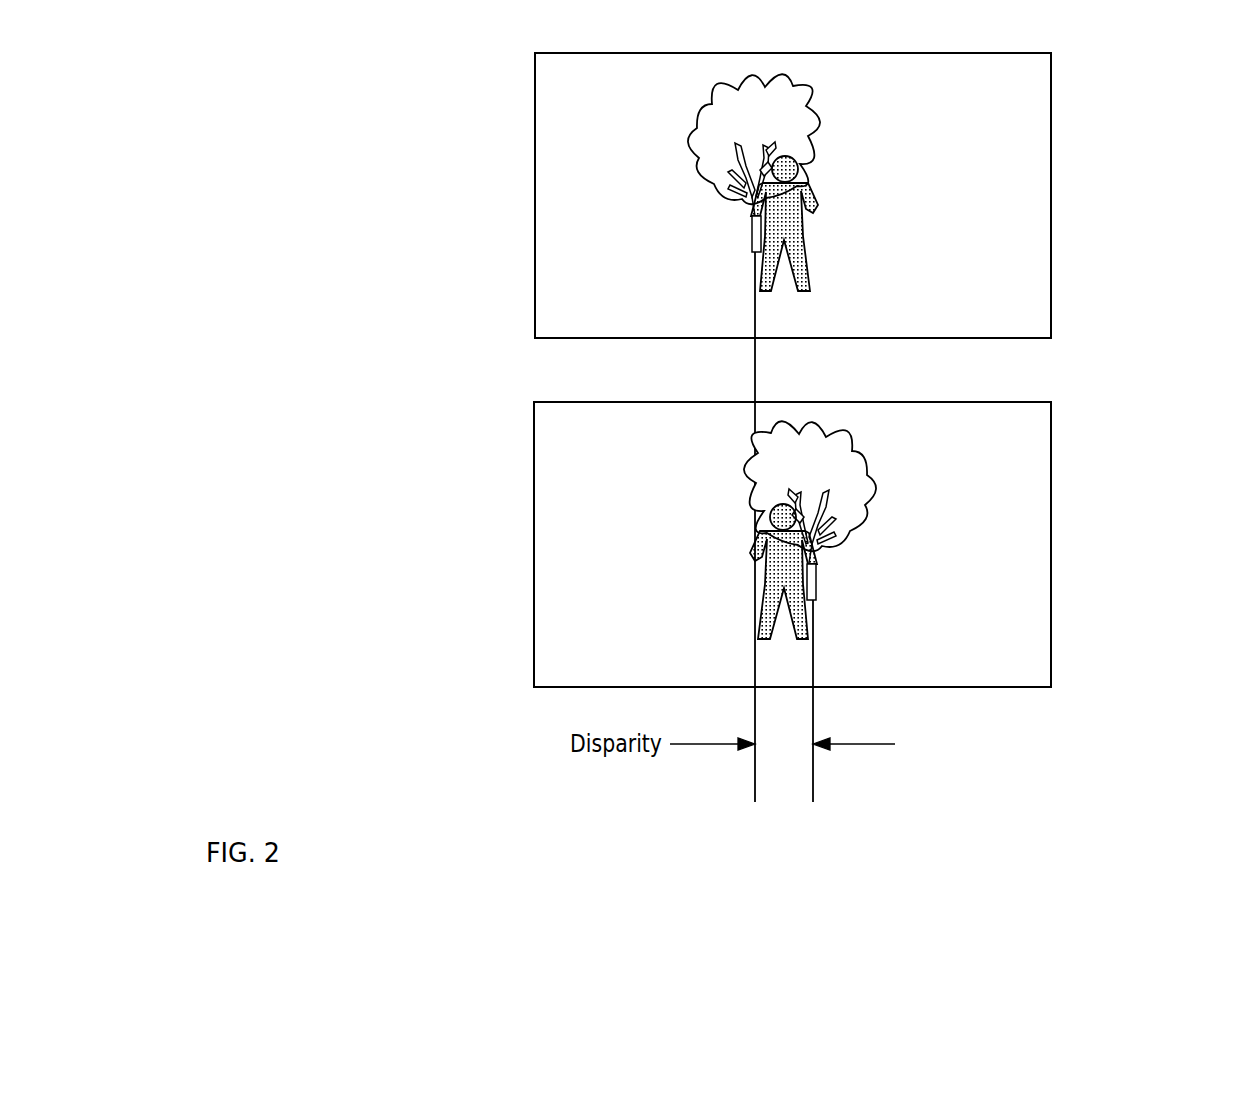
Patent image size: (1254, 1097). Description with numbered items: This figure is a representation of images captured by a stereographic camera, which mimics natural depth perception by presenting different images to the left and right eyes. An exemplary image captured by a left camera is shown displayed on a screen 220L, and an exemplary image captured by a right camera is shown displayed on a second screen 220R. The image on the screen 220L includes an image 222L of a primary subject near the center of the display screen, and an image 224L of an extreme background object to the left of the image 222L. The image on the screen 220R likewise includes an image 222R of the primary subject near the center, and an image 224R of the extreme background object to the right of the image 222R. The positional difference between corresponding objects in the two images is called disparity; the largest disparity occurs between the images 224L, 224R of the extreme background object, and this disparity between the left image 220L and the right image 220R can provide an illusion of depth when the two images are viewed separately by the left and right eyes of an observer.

The screen 220L is at (1051, 168).
The image of primary subject 222L is at (817, 208).
The image of extreme background object 224L is at (692, 143).
The second screen 220R is at (1051, 508).
The image of primary subject 222R is at (752, 560).
The image of extreme background object 224R is at (870, 480).